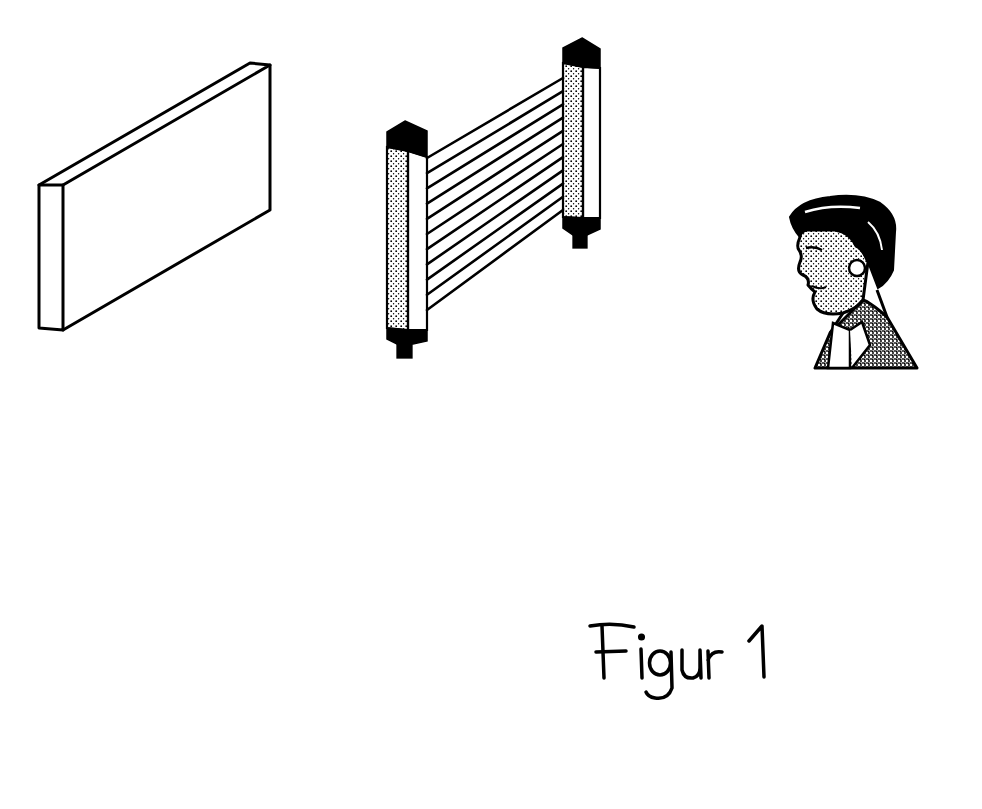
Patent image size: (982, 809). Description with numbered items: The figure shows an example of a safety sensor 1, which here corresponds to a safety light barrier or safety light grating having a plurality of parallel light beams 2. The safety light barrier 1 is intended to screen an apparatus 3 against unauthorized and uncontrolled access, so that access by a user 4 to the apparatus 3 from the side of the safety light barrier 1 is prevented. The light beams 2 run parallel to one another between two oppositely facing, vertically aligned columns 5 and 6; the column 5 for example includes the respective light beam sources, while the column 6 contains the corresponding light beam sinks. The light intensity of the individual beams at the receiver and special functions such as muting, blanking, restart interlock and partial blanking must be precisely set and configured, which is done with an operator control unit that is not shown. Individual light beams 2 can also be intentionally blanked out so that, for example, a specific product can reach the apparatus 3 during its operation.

The safety sensor 1 is at (506, 240).
The light beams 2 is at (493, 268).
The apparatus 3 is at (179, 195).
The user 4 is at (812, 298).
The column 5 is at (593, 115).
The column 6 is at (397, 252).